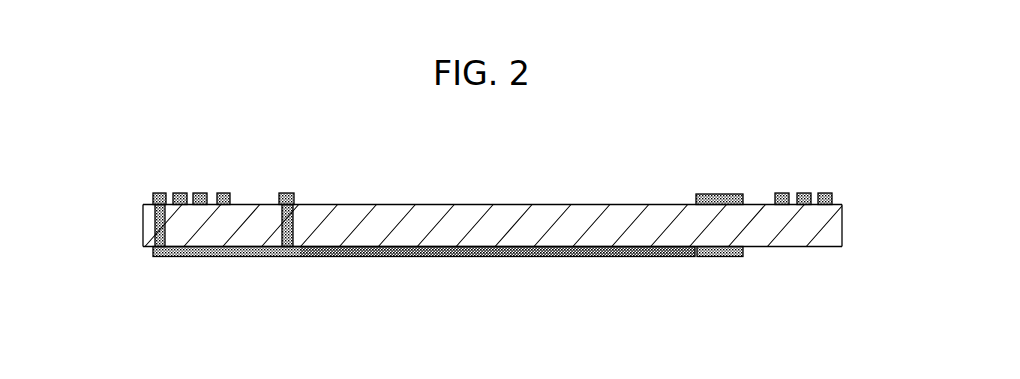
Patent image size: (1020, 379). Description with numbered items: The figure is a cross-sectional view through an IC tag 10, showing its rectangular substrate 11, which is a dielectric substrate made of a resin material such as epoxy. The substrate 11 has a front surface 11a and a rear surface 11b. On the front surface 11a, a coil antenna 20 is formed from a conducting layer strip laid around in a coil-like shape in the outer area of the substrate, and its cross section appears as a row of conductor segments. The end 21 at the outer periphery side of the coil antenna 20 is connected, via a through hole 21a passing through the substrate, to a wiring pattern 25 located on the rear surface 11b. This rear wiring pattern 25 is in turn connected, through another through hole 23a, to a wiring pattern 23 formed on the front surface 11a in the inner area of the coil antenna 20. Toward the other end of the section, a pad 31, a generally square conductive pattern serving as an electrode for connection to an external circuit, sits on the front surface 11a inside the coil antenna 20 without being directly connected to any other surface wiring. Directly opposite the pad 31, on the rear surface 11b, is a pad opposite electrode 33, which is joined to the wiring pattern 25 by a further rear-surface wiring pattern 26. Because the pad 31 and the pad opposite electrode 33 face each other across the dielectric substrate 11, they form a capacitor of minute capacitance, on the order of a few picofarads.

The IC tag 10 is at (495, 239).
The substrate 11 is at (843, 215).
The surface 11a is at (836, 202).
The rear surface 11b is at (826, 250).
The coil antenna 20 is at (235, 185).
The end 21 is at (152, 197).
The through hole 21a is at (158, 208).
The wiring pattern 23 is at (283, 193).
The through hole 23a is at (294, 222).
The wiring pattern 25 is at (220, 258).
The wiring pattern 26 is at (385, 258).
The pad 31 is at (716, 194).
The pad opposite electrode 33 is at (712, 257).